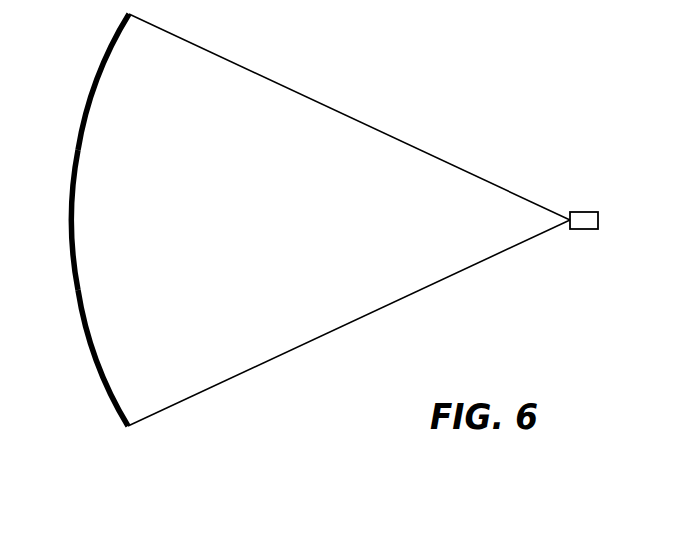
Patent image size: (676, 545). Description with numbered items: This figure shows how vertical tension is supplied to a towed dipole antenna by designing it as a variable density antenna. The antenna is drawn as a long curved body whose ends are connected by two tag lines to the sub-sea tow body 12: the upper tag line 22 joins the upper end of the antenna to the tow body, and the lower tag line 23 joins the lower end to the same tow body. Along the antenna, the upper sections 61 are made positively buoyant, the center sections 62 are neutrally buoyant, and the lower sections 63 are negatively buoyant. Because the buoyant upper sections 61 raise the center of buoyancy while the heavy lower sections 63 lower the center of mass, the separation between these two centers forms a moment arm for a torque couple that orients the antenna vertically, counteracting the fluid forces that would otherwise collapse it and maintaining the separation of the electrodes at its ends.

The sub-sea tow body 12 is at (589, 212).
The upper tag line 22 is at (357, 120).
The lower tag line 23 is at (352, 321).
The upper sections 61 is at (96, 75).
The center sections 62 is at (67, 206).
The lower sections 63 is at (92, 355).